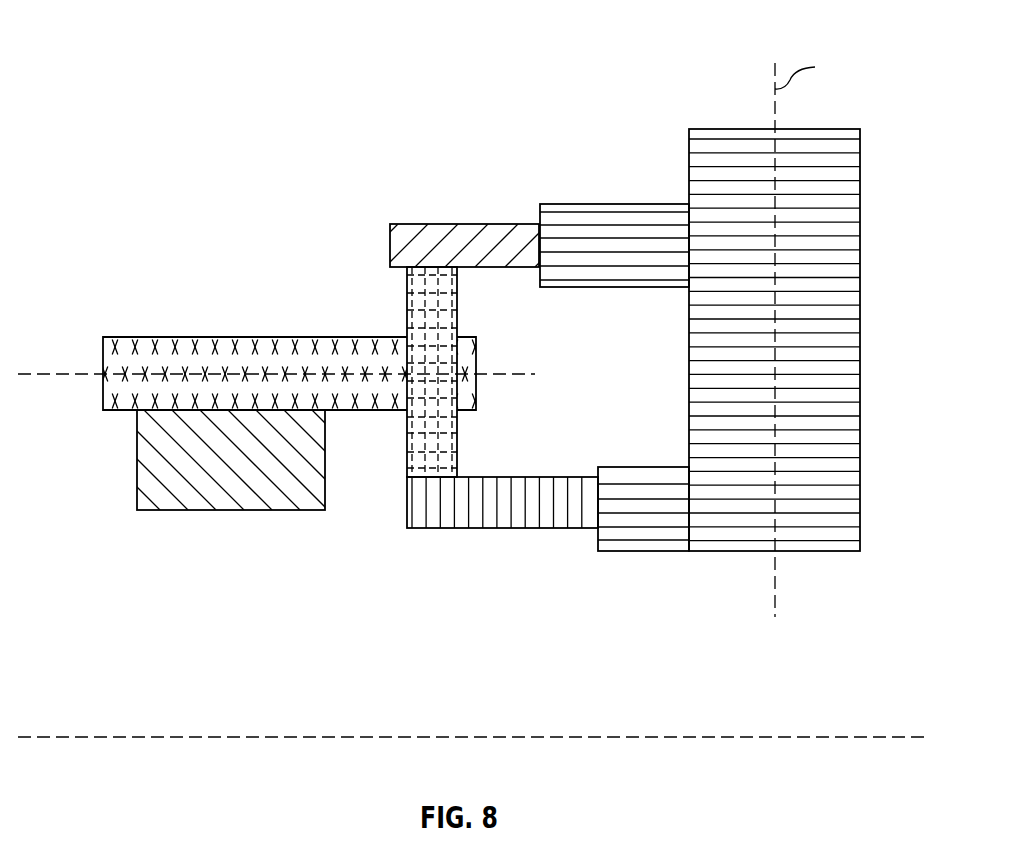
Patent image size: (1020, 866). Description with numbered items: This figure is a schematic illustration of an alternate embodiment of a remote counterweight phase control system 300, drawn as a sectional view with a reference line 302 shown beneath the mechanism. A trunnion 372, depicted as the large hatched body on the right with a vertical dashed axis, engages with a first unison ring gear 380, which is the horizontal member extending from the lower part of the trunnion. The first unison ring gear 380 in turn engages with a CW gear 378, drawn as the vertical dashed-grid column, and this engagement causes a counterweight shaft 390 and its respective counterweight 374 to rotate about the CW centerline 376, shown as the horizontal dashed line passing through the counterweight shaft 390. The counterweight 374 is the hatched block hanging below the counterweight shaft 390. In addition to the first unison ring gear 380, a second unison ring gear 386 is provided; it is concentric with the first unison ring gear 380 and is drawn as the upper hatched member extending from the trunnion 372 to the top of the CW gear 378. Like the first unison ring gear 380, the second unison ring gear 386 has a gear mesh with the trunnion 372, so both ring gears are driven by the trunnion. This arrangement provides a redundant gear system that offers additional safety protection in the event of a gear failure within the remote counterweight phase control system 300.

The remote counterweight phase control system 300 is at (143, 60).
The reference plane / substrate line 302 is at (845, 735).
The trunnion 372 is at (848, 462).
The counterweight 374 is at (210, 493).
The CW centerline 376 is at (82, 373).
The CW gear 378 is at (420, 303).
The first unison ring gear 380 is at (450, 518).
The second unison ring gear 386 is at (410, 253).
The counterweight shaft 390 is at (252, 343).